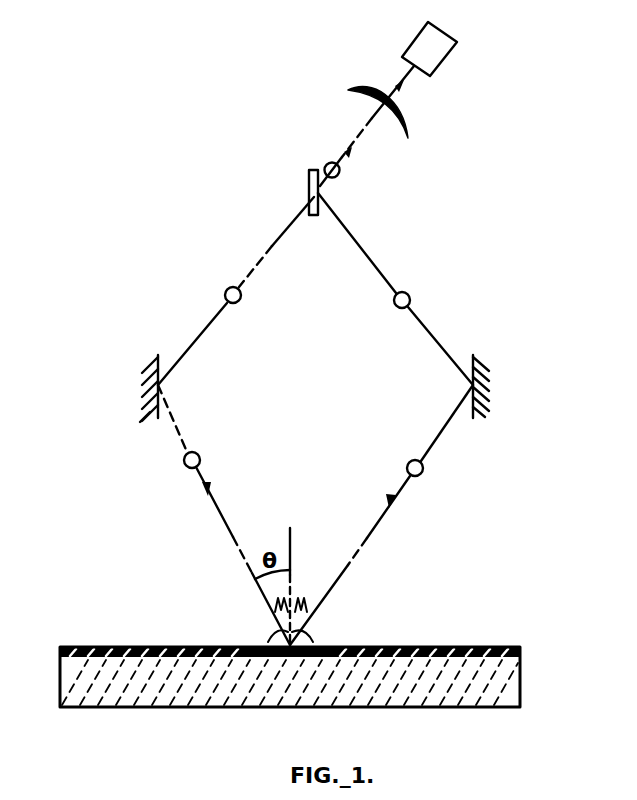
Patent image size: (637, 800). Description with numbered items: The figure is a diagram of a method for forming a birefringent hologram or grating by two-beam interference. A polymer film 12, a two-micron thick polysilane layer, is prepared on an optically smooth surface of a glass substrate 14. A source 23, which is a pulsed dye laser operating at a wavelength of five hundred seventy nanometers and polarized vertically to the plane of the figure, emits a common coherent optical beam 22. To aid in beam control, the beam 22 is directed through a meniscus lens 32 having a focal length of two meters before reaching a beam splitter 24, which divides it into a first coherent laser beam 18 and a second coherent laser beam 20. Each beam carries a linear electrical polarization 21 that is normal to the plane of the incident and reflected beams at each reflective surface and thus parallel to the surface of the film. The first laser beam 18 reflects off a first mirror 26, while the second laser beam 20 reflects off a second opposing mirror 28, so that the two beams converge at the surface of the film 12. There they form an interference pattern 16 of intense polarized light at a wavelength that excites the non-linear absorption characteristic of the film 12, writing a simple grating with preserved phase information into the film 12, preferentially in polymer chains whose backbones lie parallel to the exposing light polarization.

The polymer film 12 is at (497, 647).
The substrate 14 is at (528, 684).
The interference pattern 16 is at (276, 633).
The first coherent laser beam 18 is at (231, 536).
The second coherent laser beam 20 is at (380, 528).
The linear electrical polarization 21 is at (327, 163).
The common coherent optical beam 22 is at (320, 187).
The source 23 is at (409, 46).
The beam splitter 24 is at (318, 216).
The first mirror 26 is at (163, 405).
The second opposing mirror 28 is at (468, 404).
The meniscus lens 32 is at (402, 117).